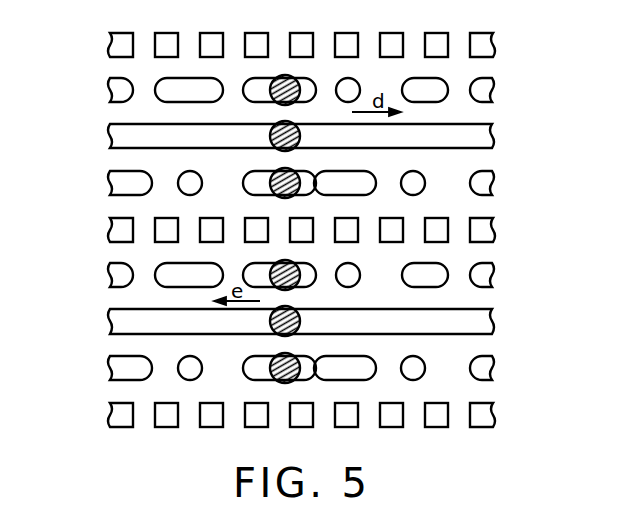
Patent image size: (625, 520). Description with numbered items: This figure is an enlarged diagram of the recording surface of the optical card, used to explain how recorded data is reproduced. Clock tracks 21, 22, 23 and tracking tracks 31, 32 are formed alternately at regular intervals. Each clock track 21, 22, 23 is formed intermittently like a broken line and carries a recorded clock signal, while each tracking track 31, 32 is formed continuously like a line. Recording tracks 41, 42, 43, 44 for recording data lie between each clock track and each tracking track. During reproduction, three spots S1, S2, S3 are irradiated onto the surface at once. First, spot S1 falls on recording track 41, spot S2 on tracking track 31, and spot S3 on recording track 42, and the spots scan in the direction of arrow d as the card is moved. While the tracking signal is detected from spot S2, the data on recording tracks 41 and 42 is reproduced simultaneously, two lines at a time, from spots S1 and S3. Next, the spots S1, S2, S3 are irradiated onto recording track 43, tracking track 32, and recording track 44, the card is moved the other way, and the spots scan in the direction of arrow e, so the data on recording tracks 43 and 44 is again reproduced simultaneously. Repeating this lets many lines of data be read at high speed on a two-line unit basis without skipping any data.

The clock track 21 is at (100, 32).
The clock track 22 is at (100, 215).
The clock track 23 is at (100, 400).
The tracking track 31 is at (100, 122).
The tracking track 32 is at (100, 307).
The recording track 41 is at (502, 53).
The recording track 42 is at (502, 150).
The recording track 43 is at (502, 240).
The recording track 44 is at (502, 335).
The spot S1 is at (293, 78).
The spot S2 is at (295, 124).
The spot S3 is at (289, 170).